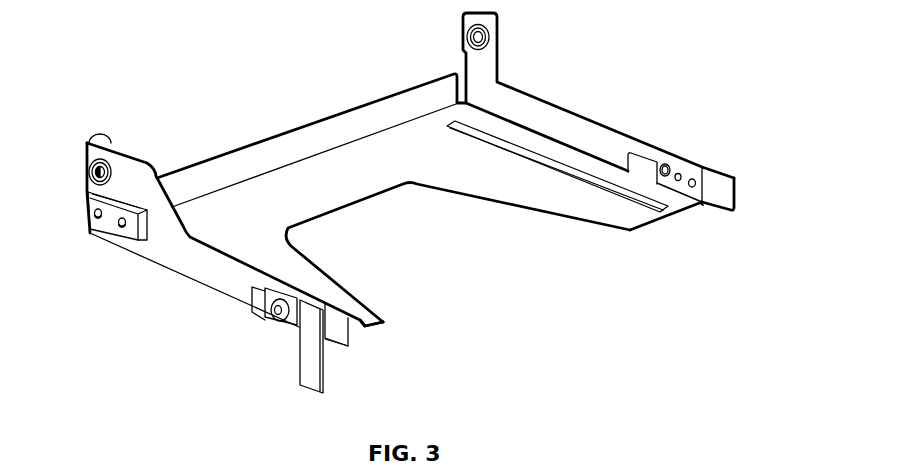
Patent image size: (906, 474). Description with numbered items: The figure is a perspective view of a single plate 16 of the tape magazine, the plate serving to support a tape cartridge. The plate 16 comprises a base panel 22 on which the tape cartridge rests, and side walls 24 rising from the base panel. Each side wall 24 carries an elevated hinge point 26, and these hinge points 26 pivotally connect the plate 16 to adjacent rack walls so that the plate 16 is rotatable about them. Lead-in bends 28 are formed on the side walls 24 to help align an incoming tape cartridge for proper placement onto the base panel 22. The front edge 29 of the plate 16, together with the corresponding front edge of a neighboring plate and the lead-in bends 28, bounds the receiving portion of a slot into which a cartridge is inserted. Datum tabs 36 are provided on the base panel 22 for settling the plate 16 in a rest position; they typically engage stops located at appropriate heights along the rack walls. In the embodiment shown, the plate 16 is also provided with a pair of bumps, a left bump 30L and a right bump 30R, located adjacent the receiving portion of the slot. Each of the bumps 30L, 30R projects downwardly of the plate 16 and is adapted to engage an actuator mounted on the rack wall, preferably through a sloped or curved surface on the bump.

The plate 16 is at (226, 74).
The base panel 22 is at (383, 149).
The side walls 24 is at (125, 157).
The hinge points 26 is at (92, 174).
The lead-in bends 28 is at (727, 192).
The front edge 29 is at (383, 323).
The left bump 30L is at (309, 366).
The right bump 30R is at (701, 204).
The datum tabs 36 is at (252, 312).